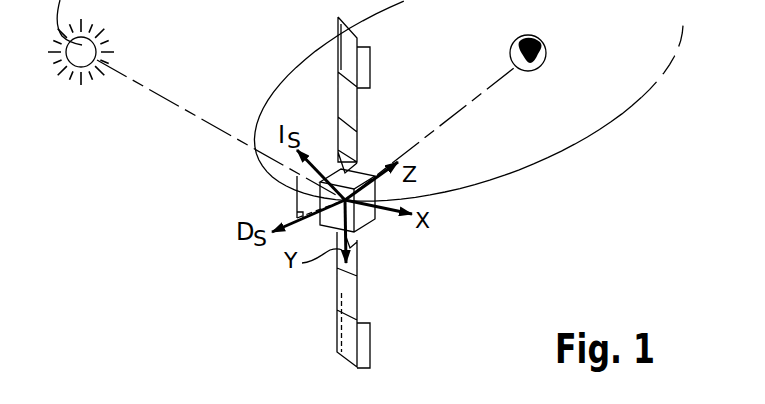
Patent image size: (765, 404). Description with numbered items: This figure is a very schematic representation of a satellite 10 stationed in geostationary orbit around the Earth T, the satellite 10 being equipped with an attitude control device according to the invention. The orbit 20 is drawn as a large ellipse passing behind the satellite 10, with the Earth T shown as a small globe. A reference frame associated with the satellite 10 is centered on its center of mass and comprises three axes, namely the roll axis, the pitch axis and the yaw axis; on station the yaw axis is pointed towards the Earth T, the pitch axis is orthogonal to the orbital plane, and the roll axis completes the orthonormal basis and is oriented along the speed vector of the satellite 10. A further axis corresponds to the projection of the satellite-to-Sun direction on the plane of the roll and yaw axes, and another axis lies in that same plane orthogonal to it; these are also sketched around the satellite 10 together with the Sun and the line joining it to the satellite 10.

The satellite 10 is at (386, 235).
The orbit 20 is at (585, 140).
The Earth T is at (542, 58).